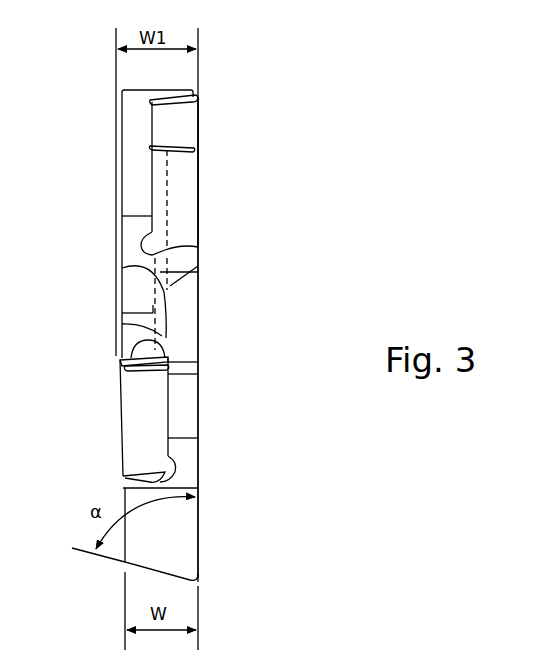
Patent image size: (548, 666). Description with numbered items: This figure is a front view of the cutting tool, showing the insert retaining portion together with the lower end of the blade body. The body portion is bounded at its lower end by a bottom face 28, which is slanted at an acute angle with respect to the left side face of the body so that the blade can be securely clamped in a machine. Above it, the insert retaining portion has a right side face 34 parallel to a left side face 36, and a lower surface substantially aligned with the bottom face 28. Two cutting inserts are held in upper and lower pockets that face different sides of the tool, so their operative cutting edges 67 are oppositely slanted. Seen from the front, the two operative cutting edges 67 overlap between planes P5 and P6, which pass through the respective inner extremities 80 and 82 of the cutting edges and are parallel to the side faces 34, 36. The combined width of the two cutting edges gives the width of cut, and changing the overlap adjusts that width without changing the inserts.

The bottom face 28 is at (152, 571).
The right side face 34 is at (121, 240).
The left side face 36 is at (198, 322).
The operative cutting edge 67 is at (162, 150).
The inner extremity 80 is at (150, 147).
The inner extremity 82 is at (152, 368).
The plane P5 is at (130, 313).
The plane P6 is at (168, 283).